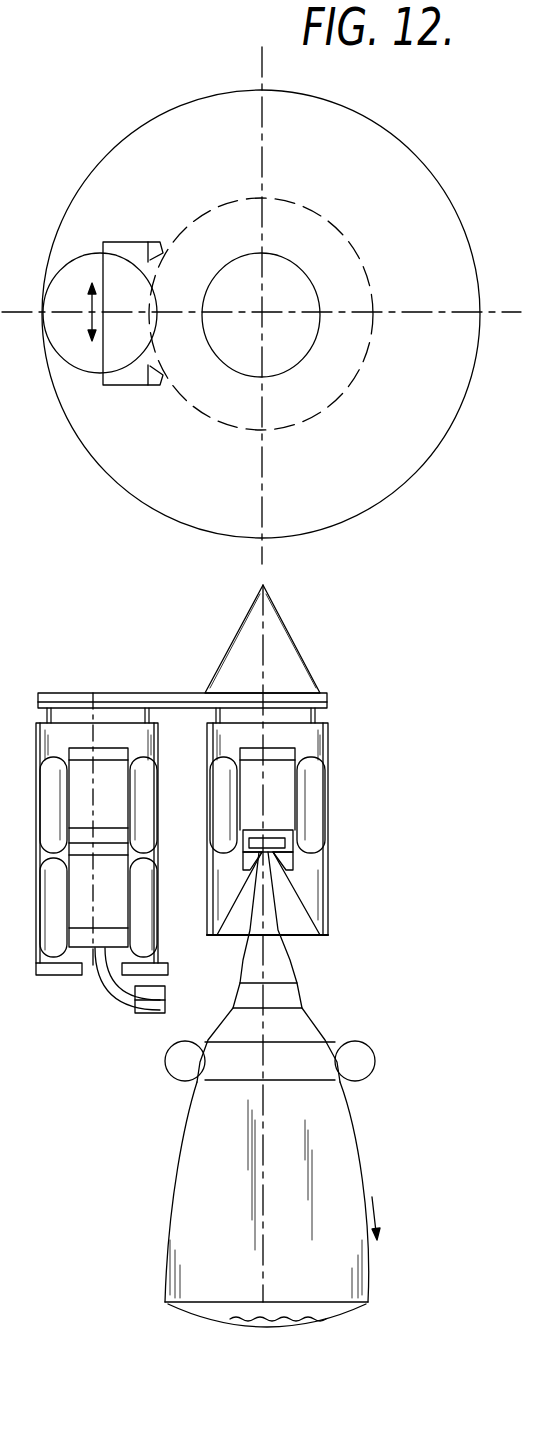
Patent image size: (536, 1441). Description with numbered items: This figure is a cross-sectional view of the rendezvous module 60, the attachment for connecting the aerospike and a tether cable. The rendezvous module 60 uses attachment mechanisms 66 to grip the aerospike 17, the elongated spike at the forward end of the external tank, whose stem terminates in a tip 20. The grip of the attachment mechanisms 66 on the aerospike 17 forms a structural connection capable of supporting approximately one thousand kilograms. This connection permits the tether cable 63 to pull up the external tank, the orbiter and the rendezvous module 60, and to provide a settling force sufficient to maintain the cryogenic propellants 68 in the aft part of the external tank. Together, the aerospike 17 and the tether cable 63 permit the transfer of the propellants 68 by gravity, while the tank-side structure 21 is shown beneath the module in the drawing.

The tether cable 63 is at (265, 628).
The tip 20 is at (273, 838).
The rendezvous module 60 is at (380, 838).
The attachment mechanisms 66 is at (290, 860).
The aerospike 17 is at (282, 965).
The bag 21 is at (348, 1142).
The cryogenic propellants 68 is at (282, 1317).